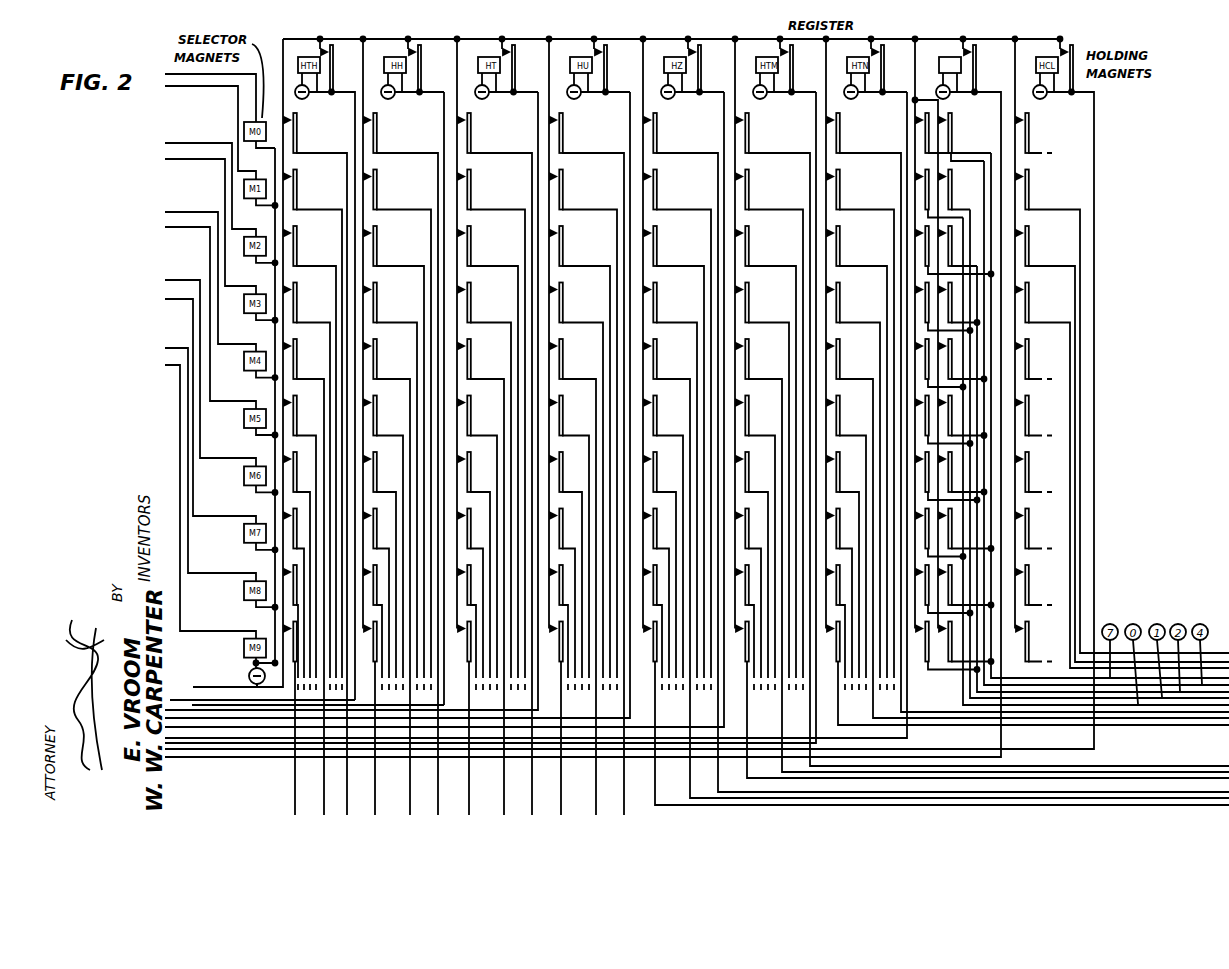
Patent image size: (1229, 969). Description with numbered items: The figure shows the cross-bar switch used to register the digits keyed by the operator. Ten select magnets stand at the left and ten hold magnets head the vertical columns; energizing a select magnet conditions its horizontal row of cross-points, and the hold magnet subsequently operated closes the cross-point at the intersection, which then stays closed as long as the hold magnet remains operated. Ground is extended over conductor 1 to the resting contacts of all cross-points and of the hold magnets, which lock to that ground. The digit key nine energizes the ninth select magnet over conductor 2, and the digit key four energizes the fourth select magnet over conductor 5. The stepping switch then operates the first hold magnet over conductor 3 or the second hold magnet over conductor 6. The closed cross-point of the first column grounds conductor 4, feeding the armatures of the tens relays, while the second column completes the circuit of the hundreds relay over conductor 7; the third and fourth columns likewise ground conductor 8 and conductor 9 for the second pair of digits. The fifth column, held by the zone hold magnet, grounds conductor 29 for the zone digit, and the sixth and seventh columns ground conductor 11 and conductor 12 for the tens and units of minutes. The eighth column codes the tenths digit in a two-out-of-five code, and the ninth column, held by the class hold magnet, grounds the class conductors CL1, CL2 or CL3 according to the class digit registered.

The conductor 1 is at (327, 40).
The conductor 2 is at (182, 635).
The conductor 3 is at (170, 699).
The conductor 4 is at (370, 348).
The conductor 5 is at (178, 212).
The conductor 6 is at (192, 704).
The conductor 7 is at (416, 791).
The conductor 8 is at (470, 791).
The conductor 9 is at (597, 791).
The conductor 11 is at (1090, 773).
The conductor 12 is at (1130, 722).
The conductor 29 is at (1162, 803).
The conductor CL1 is at (1080, 218).
The conductor CL2 is at (1075, 273).
The conductor CL3 is at (1070, 337).